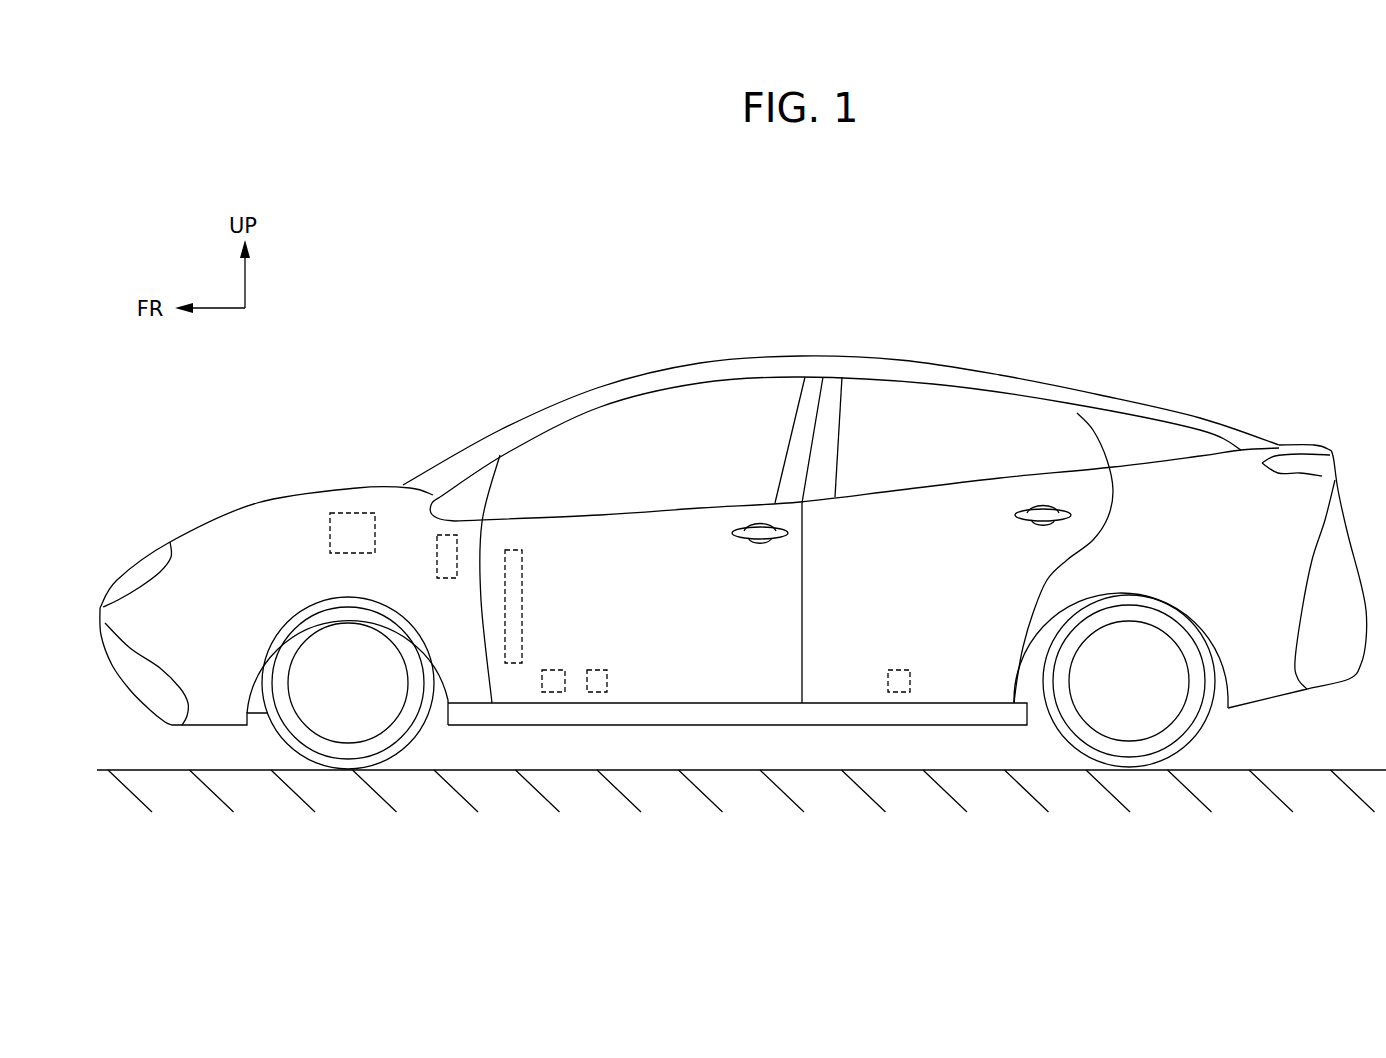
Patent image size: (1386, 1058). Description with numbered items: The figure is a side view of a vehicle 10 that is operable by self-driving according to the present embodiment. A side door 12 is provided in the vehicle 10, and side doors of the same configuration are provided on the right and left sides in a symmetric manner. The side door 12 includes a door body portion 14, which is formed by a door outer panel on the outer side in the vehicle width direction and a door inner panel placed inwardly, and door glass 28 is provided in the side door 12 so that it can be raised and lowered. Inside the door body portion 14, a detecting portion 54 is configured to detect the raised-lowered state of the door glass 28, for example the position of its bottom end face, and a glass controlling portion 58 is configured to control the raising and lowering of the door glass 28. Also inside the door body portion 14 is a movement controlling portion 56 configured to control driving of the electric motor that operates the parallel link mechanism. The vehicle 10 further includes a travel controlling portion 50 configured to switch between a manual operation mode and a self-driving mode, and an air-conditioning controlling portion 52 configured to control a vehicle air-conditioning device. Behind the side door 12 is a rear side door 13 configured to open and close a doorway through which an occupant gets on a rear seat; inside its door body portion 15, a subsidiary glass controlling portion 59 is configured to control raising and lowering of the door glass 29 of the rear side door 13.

The vehicle 10 is at (1256, 428).
The side door 12 is at (600, 552).
The rear side door 13 is at (982, 520).
The door body portion 14 is at (775, 607).
The door body portion 15 is at (1050, 558).
The door glass 28 is at (752, 405).
The door glass 29 is at (932, 420).
The travel controlling portion 50 is at (352, 527).
The air-conditioning controlling portion 52 is at (447, 543).
The detecting portion 54 is at (512, 663).
The movement controlling portion 56 is at (553, 692).
The glass controlling portion 58 is at (597, 692).
The subsidiary glass controlling portion 59 is at (898, 692).